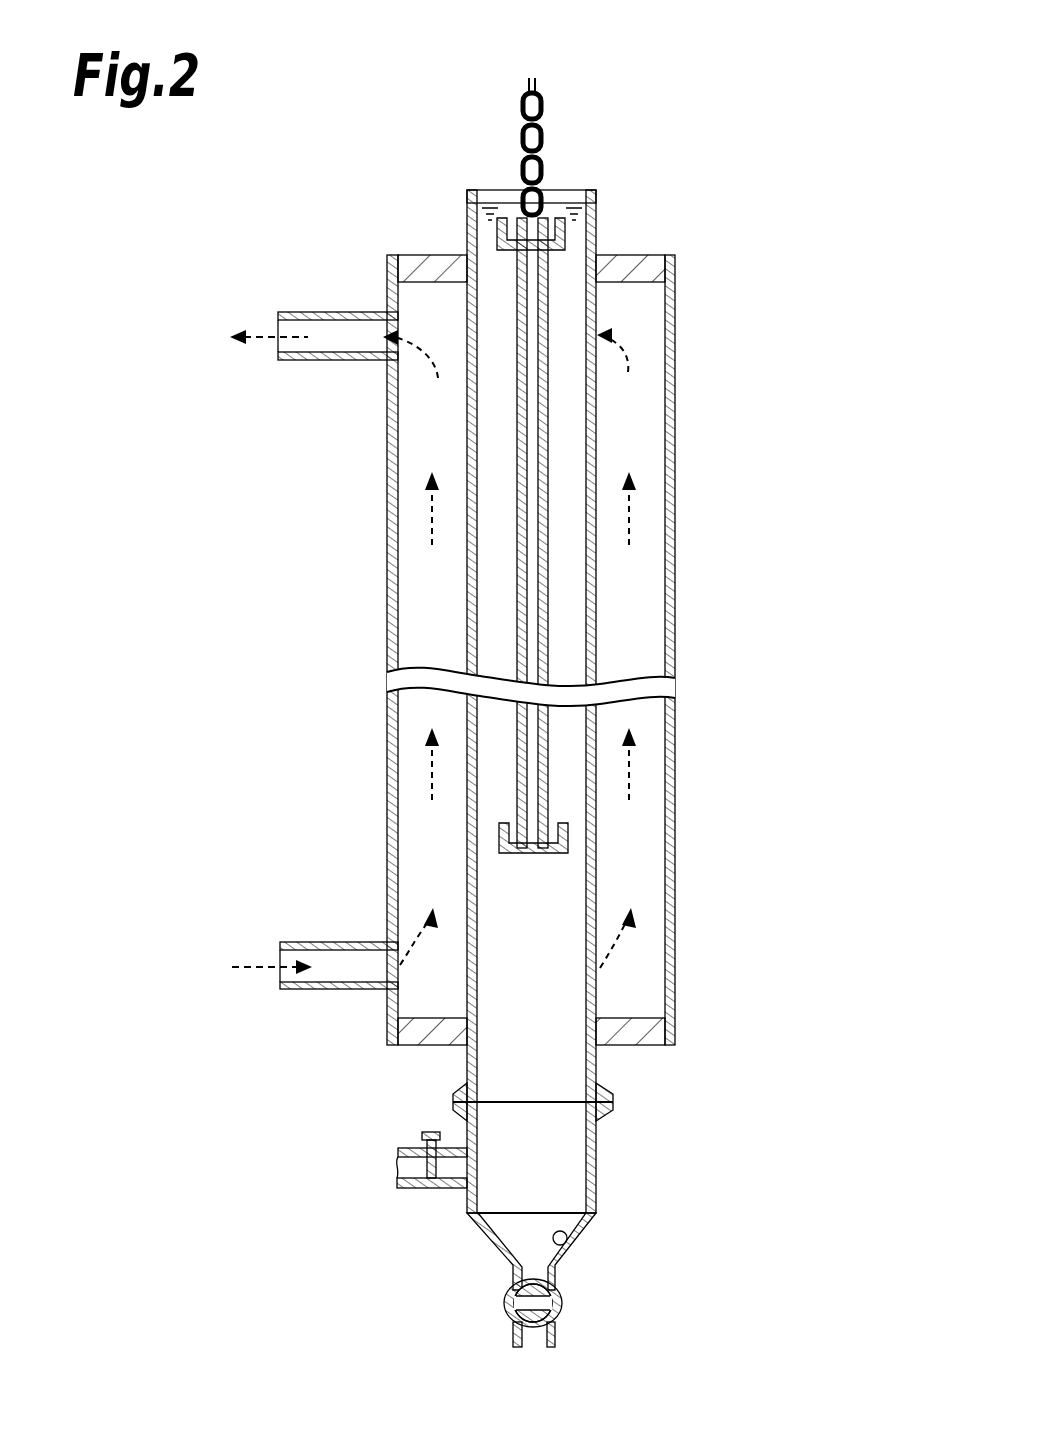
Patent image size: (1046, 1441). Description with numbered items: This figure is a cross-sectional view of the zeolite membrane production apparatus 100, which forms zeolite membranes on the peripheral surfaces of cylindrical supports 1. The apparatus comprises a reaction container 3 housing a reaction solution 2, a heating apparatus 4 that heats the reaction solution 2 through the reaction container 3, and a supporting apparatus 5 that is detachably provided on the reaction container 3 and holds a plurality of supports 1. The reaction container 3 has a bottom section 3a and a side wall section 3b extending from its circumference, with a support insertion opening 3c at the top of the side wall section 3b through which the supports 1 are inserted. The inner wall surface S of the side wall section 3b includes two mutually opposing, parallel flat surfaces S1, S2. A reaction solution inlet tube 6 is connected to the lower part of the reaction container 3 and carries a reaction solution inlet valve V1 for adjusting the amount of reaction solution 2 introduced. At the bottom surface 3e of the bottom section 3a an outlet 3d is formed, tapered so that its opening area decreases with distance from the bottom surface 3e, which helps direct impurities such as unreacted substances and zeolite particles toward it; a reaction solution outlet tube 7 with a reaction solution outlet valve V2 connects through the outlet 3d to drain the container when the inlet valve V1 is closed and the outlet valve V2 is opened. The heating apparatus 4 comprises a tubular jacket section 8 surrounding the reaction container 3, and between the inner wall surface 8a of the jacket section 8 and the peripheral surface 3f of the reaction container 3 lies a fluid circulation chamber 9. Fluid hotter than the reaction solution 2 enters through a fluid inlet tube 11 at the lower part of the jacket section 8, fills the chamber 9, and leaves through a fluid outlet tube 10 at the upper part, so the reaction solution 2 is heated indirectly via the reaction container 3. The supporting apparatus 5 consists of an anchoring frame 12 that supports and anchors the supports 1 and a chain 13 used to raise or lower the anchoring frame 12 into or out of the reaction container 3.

The zeolite membrane production apparatus 100 is at (716, 70).
The cylindrical support 1 is at (553, 384).
The reaction solution 2 is at (570, 253).
The reaction container 3 is at (604, 444).
The bottom section 3a is at (594, 1250).
The side wall section 3b is at (597, 600).
The support insertion opening 3c is at (586, 192).
The outlet 3d is at (566, 1248).
The bottom surface 3e is at (500, 1213).
The peripheral surface of the reaction container 3f is at (470, 590).
The heating apparatus 4 is at (684, 248).
The supporting apparatus 5 is at (395, 120).
The reaction solution inlet tube 6 is at (410, 1189).
The reaction solution outlet tube 7 is at (564, 1306).
The jacket section 8 is at (676, 492).
The inner wall surface of the jacket section 8a is at (664, 818).
The fluid circulation chamber 9 is at (643, 652).
The fluid outlet tube 10 is at (338, 312).
The fluid inlet tube 11 is at (340, 942).
The anchoring frame 12 is at (505, 232).
The chain 13 is at (522, 104).
The inner wall surface S is at (586, 990).
The flat surface S1 is at (594, 300).
The flat surface S2 is at (472, 418).
The reaction solution inlet valve V1 is at (420, 1164).
The reaction solution outlet valve V2 is at (510, 1331).